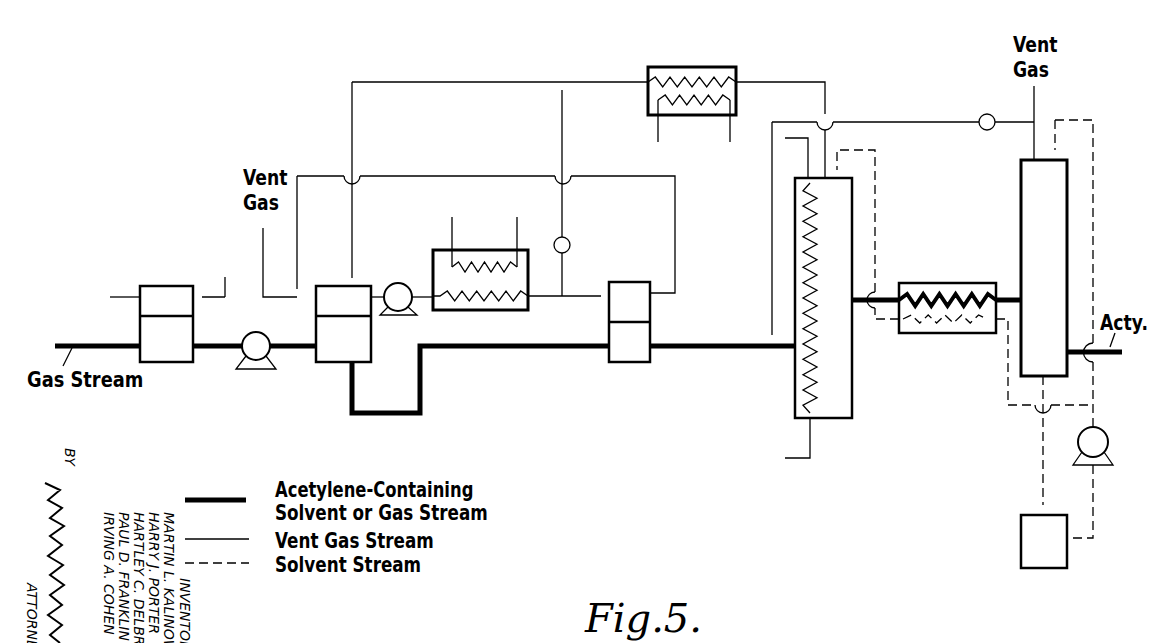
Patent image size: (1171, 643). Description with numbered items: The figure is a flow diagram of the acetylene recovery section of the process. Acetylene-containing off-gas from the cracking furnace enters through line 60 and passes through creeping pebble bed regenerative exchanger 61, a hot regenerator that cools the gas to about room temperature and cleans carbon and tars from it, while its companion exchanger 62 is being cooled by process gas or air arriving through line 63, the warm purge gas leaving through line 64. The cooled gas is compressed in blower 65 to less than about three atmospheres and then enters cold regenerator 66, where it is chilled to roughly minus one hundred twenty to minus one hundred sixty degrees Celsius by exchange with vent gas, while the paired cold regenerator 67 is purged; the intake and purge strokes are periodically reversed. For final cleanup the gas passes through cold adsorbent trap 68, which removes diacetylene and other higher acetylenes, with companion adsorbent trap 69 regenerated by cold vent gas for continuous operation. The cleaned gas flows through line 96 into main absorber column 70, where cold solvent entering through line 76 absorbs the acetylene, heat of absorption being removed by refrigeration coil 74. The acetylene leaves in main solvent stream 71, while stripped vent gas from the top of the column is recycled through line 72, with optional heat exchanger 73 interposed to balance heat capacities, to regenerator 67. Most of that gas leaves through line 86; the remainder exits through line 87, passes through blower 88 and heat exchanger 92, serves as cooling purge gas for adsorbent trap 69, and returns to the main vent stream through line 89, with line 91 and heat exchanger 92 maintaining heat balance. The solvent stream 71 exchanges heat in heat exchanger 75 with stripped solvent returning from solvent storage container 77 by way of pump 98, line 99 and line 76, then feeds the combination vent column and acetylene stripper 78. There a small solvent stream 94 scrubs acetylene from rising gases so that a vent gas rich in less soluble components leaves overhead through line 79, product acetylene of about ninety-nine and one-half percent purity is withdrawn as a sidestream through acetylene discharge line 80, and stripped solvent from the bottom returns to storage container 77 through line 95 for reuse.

The line 60 is at (82, 340).
The creeping pebble bed regenerative exchanger 61 is at (170, 362).
The exchanger 62 is at (163, 286).
The line 63 is at (225, 285).
The line 64 is at (128, 297).
The blower 65 is at (256, 369).
The cold regenerator 66 is at (323, 365).
The cold regenerator 67 is at (327, 285).
The cold adsorbent trap 68 is at (630, 363).
The companion adsorbent trap 69 is at (628, 280).
The main absorber column 70 is at (795, 372).
The main solvent stream 71 is at (1003, 297).
The line 72 is at (793, 82).
The heat exchanger 73 is at (690, 67).
The refrigeration coil 74 is at (798, 458).
The heat exchanger 75 is at (941, 283).
The line 76 is at (1008, 370).
The solvent storage container 77 is at (1043, 568).
The combination vent column and acetylene stripper 78 is at (1021, 198).
The line 79 is at (1034, 100).
The acetylene discharge line 80 is at (1117, 356).
The line 86 is at (286, 297).
The line 87 is at (378, 292).
The blower 88 is at (408, 316).
The line 89 is at (675, 222).
The line 91 is at (562, 214).
The heat exchanger 92 is at (475, 248).
The stream of solvent 94 is at (1093, 198).
The line 95 is at (1043, 455).
The line 96 is at (697, 349).
The pump 98 is at (1101, 466).
The line 99 is at (1097, 425).